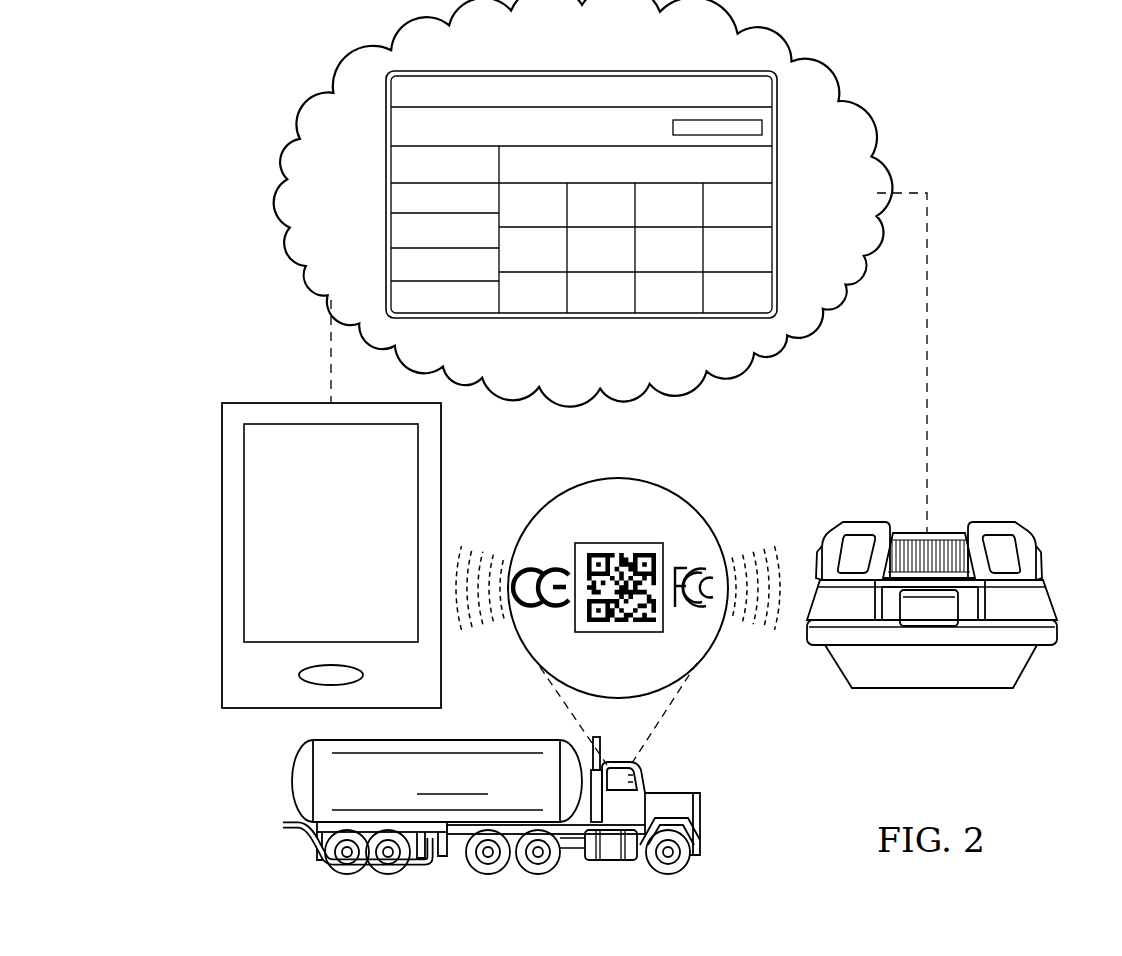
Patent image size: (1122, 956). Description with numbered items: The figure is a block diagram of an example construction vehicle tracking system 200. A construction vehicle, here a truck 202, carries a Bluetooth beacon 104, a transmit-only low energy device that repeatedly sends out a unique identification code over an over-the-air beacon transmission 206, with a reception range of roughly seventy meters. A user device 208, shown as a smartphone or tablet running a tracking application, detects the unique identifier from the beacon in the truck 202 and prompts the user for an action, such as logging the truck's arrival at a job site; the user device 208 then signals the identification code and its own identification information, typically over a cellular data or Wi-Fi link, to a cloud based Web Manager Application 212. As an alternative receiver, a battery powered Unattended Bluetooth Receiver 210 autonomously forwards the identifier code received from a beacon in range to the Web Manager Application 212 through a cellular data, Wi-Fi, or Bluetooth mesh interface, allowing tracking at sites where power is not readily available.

The system 200 is at (970, 104).
The Web Manager Application 212 is at (360, 80).
The user device 208 is at (222, 555).
The Bluetooth beacon 104 is at (618, 478).
The wireless communication 206 is at (491, 526).
The Unattended Bluetooth Receiver 210 is at (1034, 665).
The truck 202 is at (700, 826).